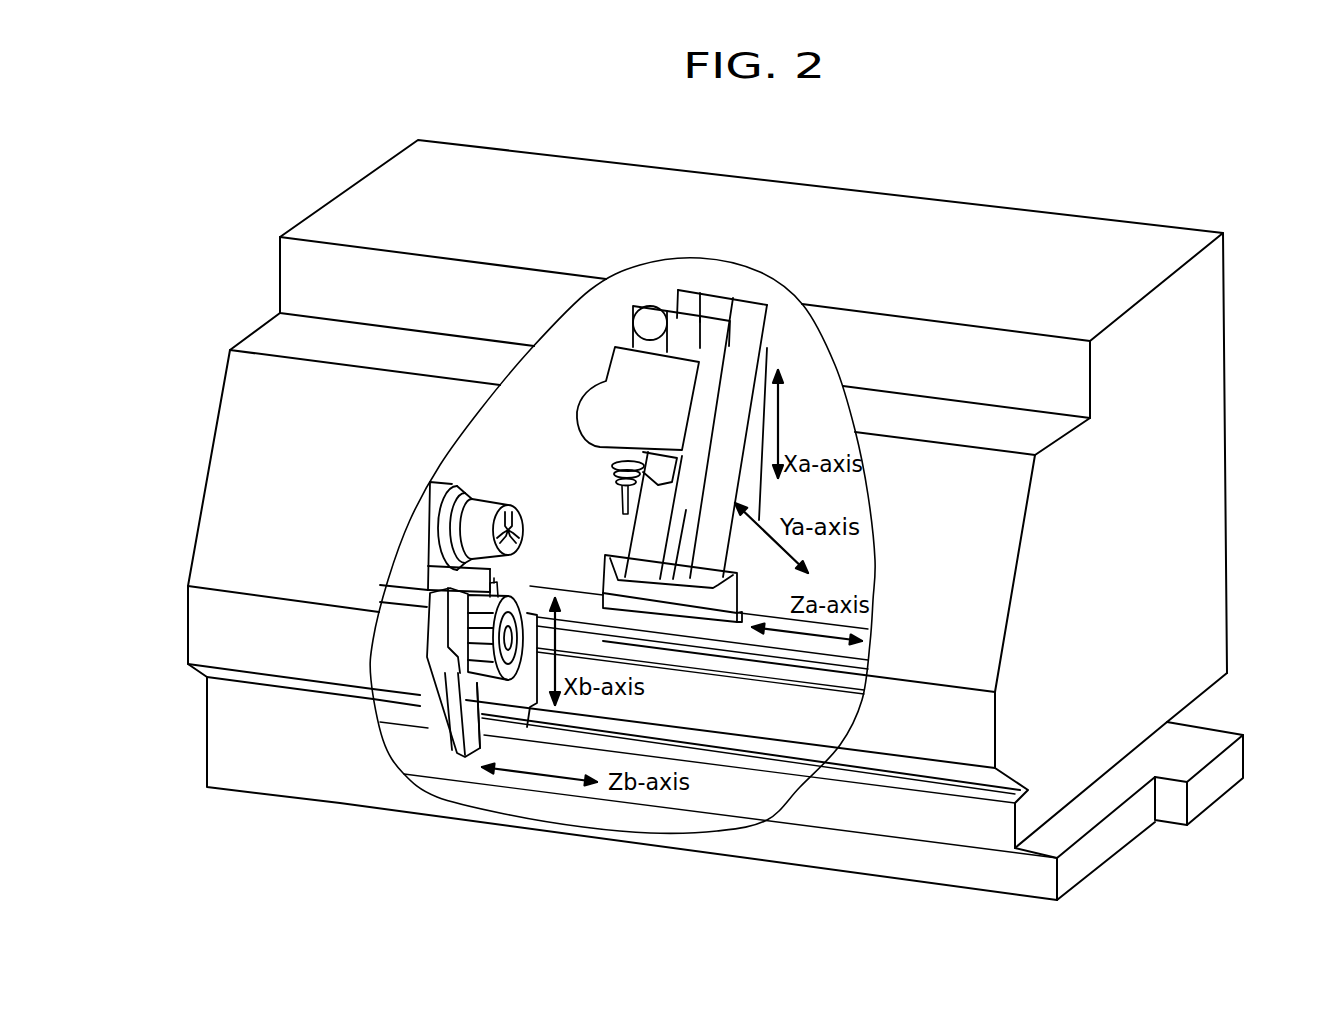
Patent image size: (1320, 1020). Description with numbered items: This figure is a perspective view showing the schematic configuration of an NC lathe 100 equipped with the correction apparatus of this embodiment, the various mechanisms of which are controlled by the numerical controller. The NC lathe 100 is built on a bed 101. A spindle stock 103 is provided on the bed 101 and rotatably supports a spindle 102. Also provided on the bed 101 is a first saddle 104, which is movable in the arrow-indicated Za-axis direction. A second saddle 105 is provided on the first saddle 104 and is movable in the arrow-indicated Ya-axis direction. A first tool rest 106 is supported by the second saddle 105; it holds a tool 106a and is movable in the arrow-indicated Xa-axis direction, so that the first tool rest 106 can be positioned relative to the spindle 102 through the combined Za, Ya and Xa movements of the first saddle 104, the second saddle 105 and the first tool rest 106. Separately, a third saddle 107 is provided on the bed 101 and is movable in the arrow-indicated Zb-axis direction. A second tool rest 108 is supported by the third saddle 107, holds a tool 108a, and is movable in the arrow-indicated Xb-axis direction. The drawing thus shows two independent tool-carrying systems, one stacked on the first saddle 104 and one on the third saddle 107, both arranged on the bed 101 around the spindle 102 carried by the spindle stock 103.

The NC lathe 100 is at (273, 178).
The bed 101 is at (715, 627).
The spindle 102 is at (511, 491).
The spindle stock 103 is at (420, 530).
The first saddle 104 is at (781, 585).
The second saddle 105 is at (768, 302).
The first tool rest 106 is at (610, 387).
The tool 106a is at (573, 499).
The third saddle 107 is at (410, 672).
The second tool rest 108 is at (523, 597).
The tool 108a is at (410, 569).